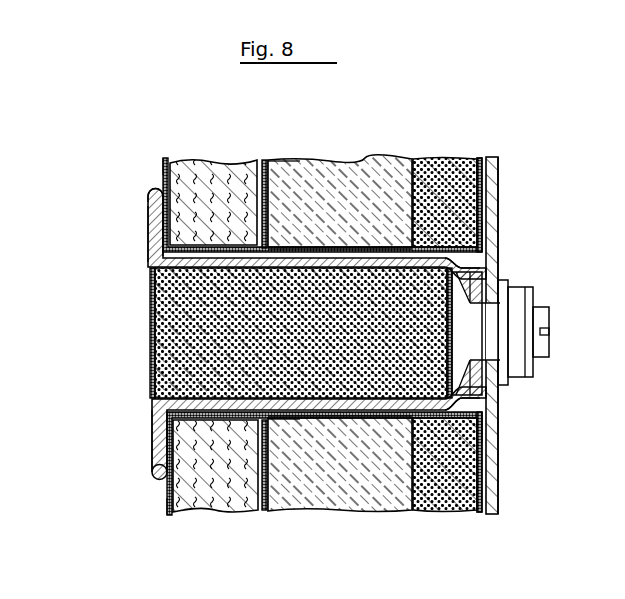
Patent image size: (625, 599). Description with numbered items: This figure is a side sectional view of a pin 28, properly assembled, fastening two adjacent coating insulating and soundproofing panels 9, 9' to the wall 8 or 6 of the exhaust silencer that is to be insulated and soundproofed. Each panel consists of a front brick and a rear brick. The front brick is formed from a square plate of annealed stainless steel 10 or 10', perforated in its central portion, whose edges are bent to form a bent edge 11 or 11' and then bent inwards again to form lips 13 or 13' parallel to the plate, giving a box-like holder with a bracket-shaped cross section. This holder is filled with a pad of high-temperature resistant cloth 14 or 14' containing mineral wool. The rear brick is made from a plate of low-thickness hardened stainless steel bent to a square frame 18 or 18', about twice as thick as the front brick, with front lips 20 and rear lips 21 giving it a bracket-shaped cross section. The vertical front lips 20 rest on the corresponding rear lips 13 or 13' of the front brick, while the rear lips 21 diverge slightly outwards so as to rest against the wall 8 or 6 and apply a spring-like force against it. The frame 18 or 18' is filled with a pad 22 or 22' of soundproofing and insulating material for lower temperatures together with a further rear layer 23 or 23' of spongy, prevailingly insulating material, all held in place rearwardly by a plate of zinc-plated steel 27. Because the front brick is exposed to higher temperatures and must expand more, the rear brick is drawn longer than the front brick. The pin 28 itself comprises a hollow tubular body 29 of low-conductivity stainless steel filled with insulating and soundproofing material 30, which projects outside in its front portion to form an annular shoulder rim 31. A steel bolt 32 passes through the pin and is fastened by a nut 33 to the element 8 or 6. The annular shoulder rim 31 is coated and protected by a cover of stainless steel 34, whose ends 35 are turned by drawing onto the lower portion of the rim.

The vertical support structure 6 is at (535, 335).
The side wall 8 is at (498, 192).
The coating insulating and soundproofing panel 9 is at (114, 145).
The coating insulating and soundproofing panel 9' is at (105, 530).
The perforated annealed stainless steel plate 10 is at (284, 202).
The perforated annealed stainless steel plate 10' is at (288, 463).
The bent edge 11 is at (294, 243).
The bent edge 11' is at (293, 433).
The lip 13 is at (248, 183).
The lip 13' is at (251, 491).
The pad of high-temperature resistant cloth 14 is at (213, 182).
The pad of high-temperature resistant cloth 14' is at (215, 491).
The hardened stainless steel frame 18 is at (340, 185).
The hardened stainless steel frame 18' is at (413, 418).
The front lip 20 is at (297, 160).
The rear lip 21 is at (483, 232).
The pad 22 is at (340, 171).
The pad 22' is at (343, 496).
The rear insulating layer 23 is at (445, 179).
The rear insulating layer 23' is at (450, 489).
The zinc-plated steel plate 27 is at (480, 170).
The pin 28 is at (142, 356).
The hollow tubular body 29 is at (478, 268).
The insulating and soundproofing material 30 is at (413, 357).
The annular shoulder rim 31 is at (149, 237).
The steel bolt 32 is at (485, 322).
The nut 33 is at (524, 367).
The stainless steel cover 34 is at (152, 313).
The cover ends 35 is at (149, 208).